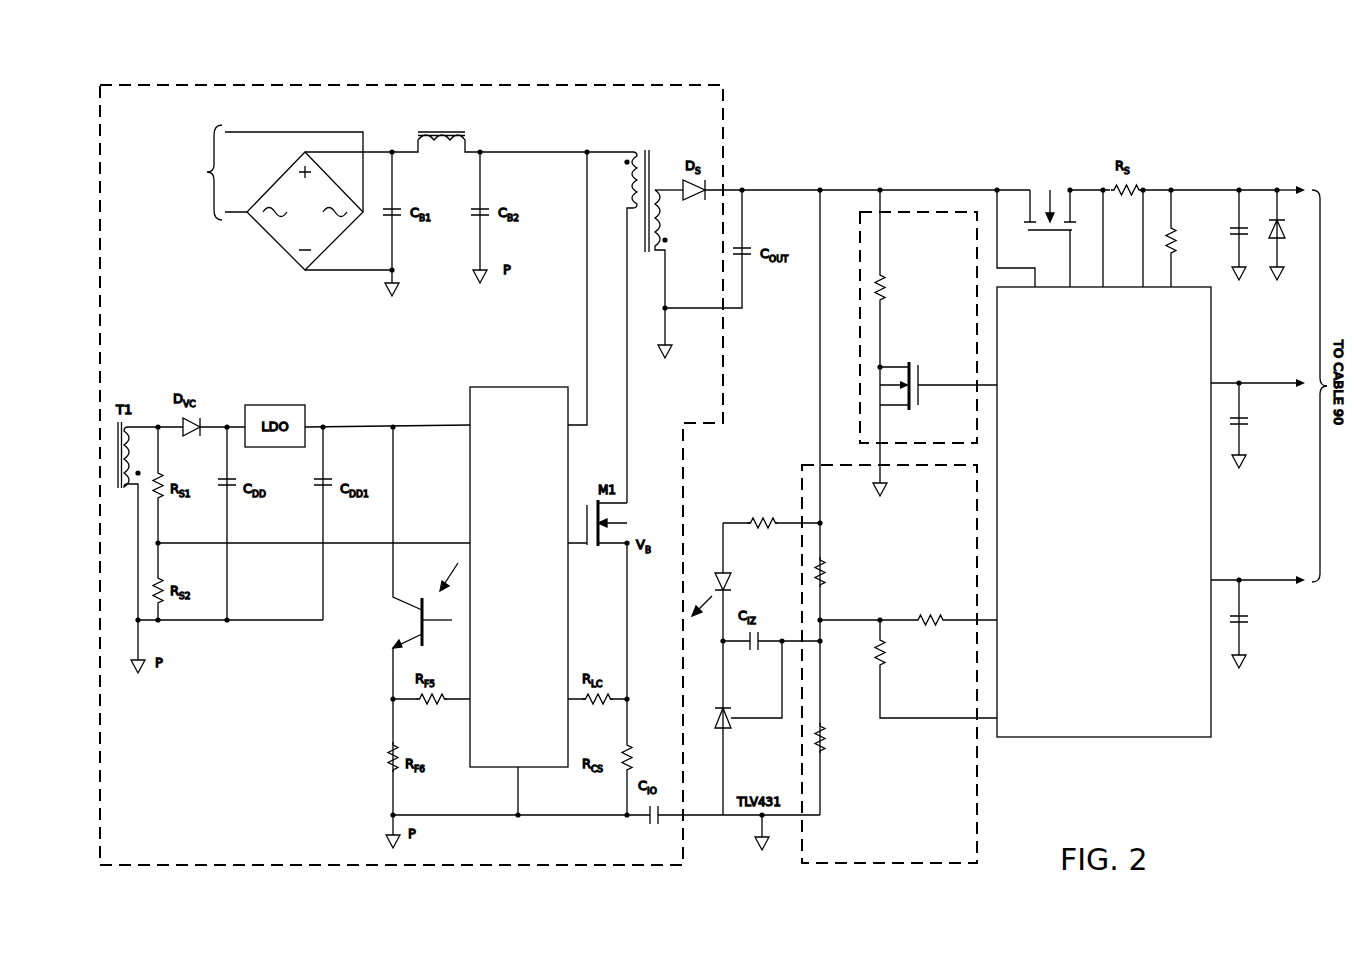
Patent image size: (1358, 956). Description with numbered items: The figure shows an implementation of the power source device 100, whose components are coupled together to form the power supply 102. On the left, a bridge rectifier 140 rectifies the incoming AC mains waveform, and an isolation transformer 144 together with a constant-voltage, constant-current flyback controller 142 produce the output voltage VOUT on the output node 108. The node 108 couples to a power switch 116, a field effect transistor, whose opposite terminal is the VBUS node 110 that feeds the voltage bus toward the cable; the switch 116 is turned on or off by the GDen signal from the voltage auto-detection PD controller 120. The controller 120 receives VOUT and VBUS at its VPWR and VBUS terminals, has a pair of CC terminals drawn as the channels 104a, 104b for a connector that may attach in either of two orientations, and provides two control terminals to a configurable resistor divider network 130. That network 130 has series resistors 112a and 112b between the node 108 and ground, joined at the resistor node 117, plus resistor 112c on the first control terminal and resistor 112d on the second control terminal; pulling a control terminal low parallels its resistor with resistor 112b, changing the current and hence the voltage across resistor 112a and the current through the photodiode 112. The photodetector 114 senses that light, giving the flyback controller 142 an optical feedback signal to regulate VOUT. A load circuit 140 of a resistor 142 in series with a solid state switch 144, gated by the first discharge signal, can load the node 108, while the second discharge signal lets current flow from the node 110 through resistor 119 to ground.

The power source device 100 is at (1210, 773).
The power supply 102 is at (233, 809).
The first configuration channel CC1 104a is at (1250, 383).
The second configuration channel CC2 104b is at (1250, 580).
The VOUT node 108 is at (838, 190).
The VBUS node 110 is at (1200, 190).
The optocoupler 112 is at (732, 586).
The resistor RFBU 112a is at (826, 575).
The resistor RFBL 112b is at (826, 740).
The resistor RFBL1 112c is at (928, 616).
The resistor RFBL2 112d is at (888, 656).
The photodetector 114 is at (386, 640).
The power switch 116 is at (1072, 152).
The resistor node 117 is at (824, 619).
The resistor 119 is at (1168, 237).
The voltage auto-detection PD controller 120 is at (1089, 586).
The configurable resistor divider network 130 is at (875, 839).
The bridge rectifier 140 is at (268, 244).
The flyback controller 142 is at (504, 640).
The isolation transformer 144 is at (673, 146).